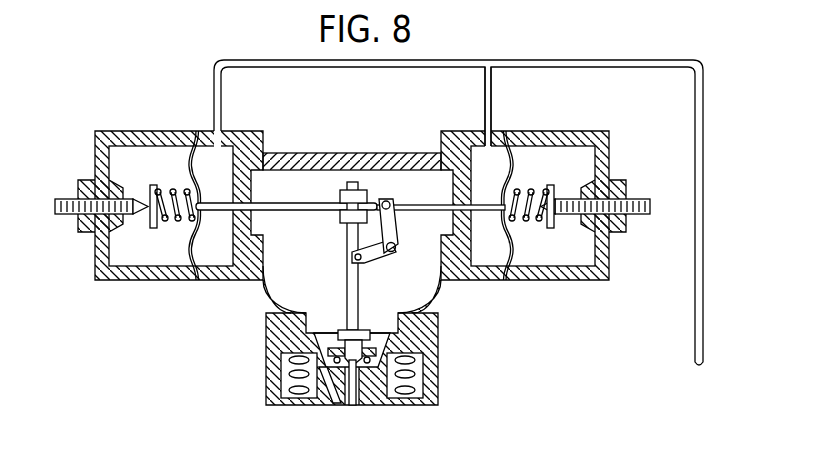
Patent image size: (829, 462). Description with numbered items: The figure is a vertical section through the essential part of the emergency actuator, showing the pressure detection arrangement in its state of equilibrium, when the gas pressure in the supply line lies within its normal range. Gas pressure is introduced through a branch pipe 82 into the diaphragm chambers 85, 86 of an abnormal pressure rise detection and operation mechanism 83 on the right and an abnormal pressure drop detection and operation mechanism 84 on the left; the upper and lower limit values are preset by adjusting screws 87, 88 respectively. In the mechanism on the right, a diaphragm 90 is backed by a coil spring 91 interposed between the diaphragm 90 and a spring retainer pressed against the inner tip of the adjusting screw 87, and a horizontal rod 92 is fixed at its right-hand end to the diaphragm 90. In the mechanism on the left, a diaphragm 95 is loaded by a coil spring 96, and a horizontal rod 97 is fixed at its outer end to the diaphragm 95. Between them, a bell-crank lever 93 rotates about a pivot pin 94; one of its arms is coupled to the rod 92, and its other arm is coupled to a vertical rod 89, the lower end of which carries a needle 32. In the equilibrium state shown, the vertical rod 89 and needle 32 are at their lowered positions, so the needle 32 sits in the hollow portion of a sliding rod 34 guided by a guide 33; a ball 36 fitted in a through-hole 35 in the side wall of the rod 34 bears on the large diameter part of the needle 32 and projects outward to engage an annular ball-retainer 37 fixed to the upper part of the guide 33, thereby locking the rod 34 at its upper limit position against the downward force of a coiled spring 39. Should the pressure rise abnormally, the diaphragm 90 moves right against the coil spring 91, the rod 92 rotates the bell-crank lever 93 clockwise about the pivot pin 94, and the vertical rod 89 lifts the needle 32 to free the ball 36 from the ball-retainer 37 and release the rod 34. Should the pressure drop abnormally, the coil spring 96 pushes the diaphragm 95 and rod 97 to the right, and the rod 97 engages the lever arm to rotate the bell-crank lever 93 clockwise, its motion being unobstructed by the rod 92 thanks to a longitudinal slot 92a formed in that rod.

The branch pipe 82 is at (562, 60).
The abnormal pressure rise detection and operation mechanism 83 is at (550, 286).
The abnormal pressure drop detection and operation mechanism 84 is at (153, 288).
The diaphragm chamber 85 is at (478, 160).
The diaphragm chamber 86 is at (222, 160).
The adjusting screw 87 is at (632, 214).
The adjusting screw 88 is at (78, 213).
The vertical rod 89 is at (343, 283).
The diaphragm 90 is at (508, 160).
The coil spring 91 is at (536, 183).
The horizontal rod 92 is at (420, 190).
The slot 92a is at (386, 198).
The bell-crank lever 93 is at (388, 262).
The pivot pin 94 is at (402, 246).
The diaphragm 95 is at (188, 165).
The coil spring 96 is at (160, 185).
The horizontal rod 97 is at (284, 200).
The needle 32 is at (364, 331).
The guide 33 is at (306, 402).
The rod 34 is at (363, 402).
The through-hole 35 is at (330, 360).
The ball 36 is at (330, 366).
The ball-retainer 37 is at (330, 382).
The coiled spring 39 is at (420, 378).